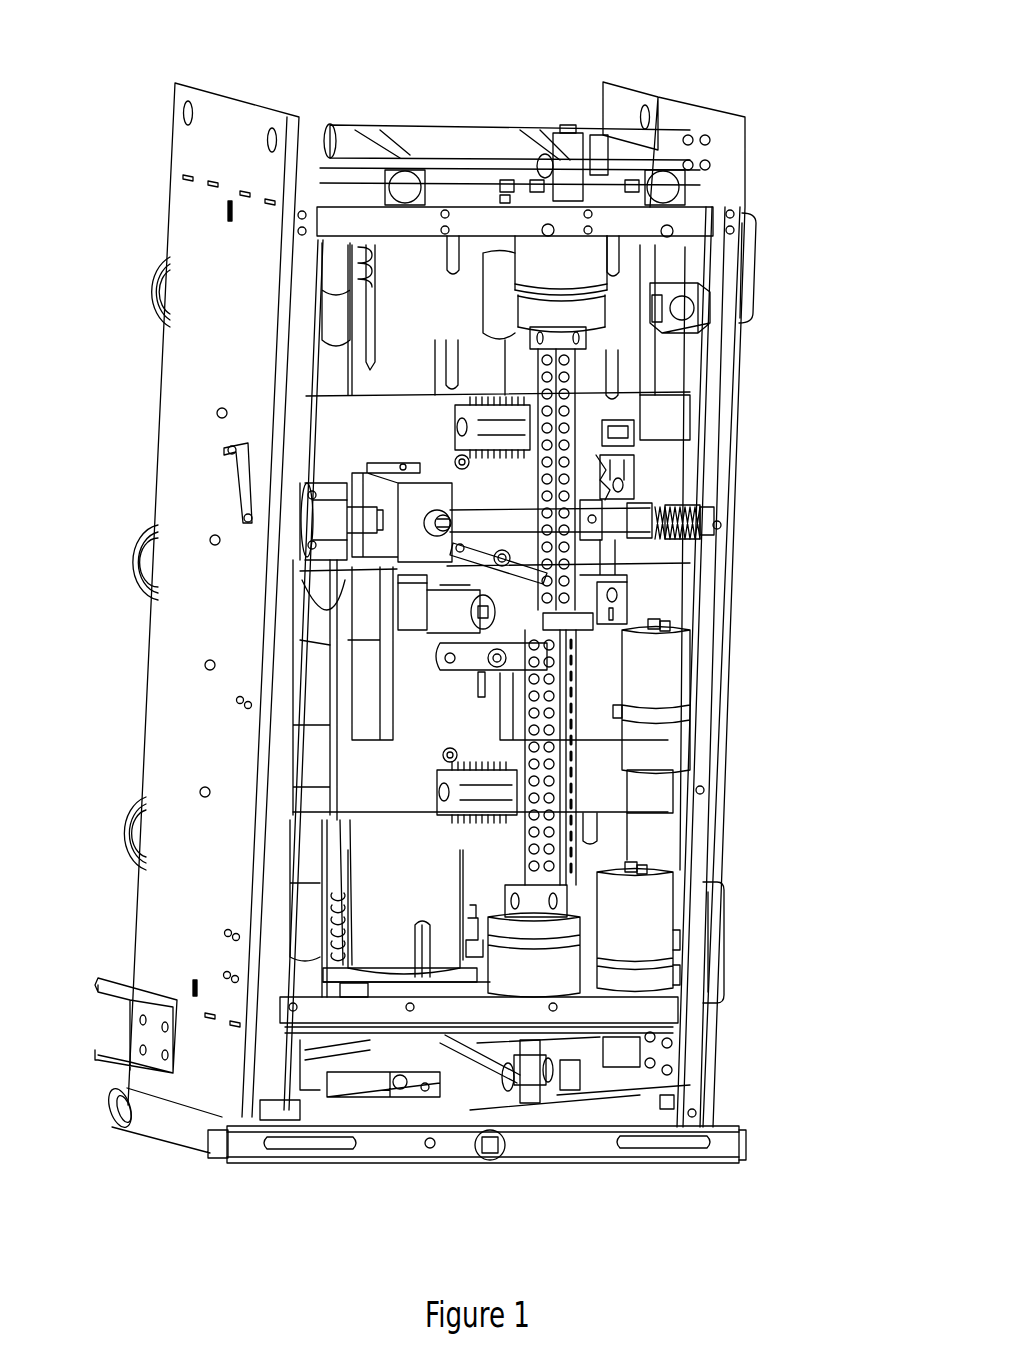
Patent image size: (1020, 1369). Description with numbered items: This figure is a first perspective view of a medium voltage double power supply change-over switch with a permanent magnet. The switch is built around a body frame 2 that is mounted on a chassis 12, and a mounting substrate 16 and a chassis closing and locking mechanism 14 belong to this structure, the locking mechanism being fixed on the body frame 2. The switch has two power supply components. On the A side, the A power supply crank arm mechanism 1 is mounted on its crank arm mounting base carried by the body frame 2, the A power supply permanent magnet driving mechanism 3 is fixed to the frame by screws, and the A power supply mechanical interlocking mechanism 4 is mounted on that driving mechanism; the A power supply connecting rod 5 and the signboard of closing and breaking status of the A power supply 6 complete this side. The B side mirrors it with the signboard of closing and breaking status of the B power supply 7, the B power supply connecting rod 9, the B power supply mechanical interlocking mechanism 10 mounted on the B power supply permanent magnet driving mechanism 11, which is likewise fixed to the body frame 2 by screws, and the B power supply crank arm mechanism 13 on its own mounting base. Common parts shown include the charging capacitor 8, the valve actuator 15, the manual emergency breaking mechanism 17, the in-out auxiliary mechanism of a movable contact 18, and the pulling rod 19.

The A power supply crank arm mechanism 1 is at (455, 140).
The body frame 2 is at (683, 100).
The A power supply permanent magnet driving mechanism 3 is at (575, 267).
The A power supply mechanical interlocking mechanism 4 is at (577, 413).
The A power supply connecting rod 5 is at (637, 440).
The signboard of closing and breaking status of the A power supply 6 is at (655, 487).
The signboard of closing and breaking status of the B power supply 7 is at (617, 604).
The charging capacitor 8 is at (658, 682).
The B power supply connecting rod 9 is at (617, 706).
The B power supply mechanical interlocking mechanism 10 is at (577, 763).
The B power supply permanent magnet driving mechanism 11 is at (543, 958).
The chassis 12 is at (665, 1150).
The B power supply crank arm mechanism 13 is at (467, 1053).
The chassis closing and locking mechanism 14 is at (418, 1087).
The valve actuator 15 is at (130, 1032).
The mounting substrate 16 is at (387, 770).
The manual emergency breaking mechanism 17 is at (433, 605).
The in-out auxiliary mechanism of a movable contact 18 is at (407, 513).
The pulling rod 19 is at (350, 414).